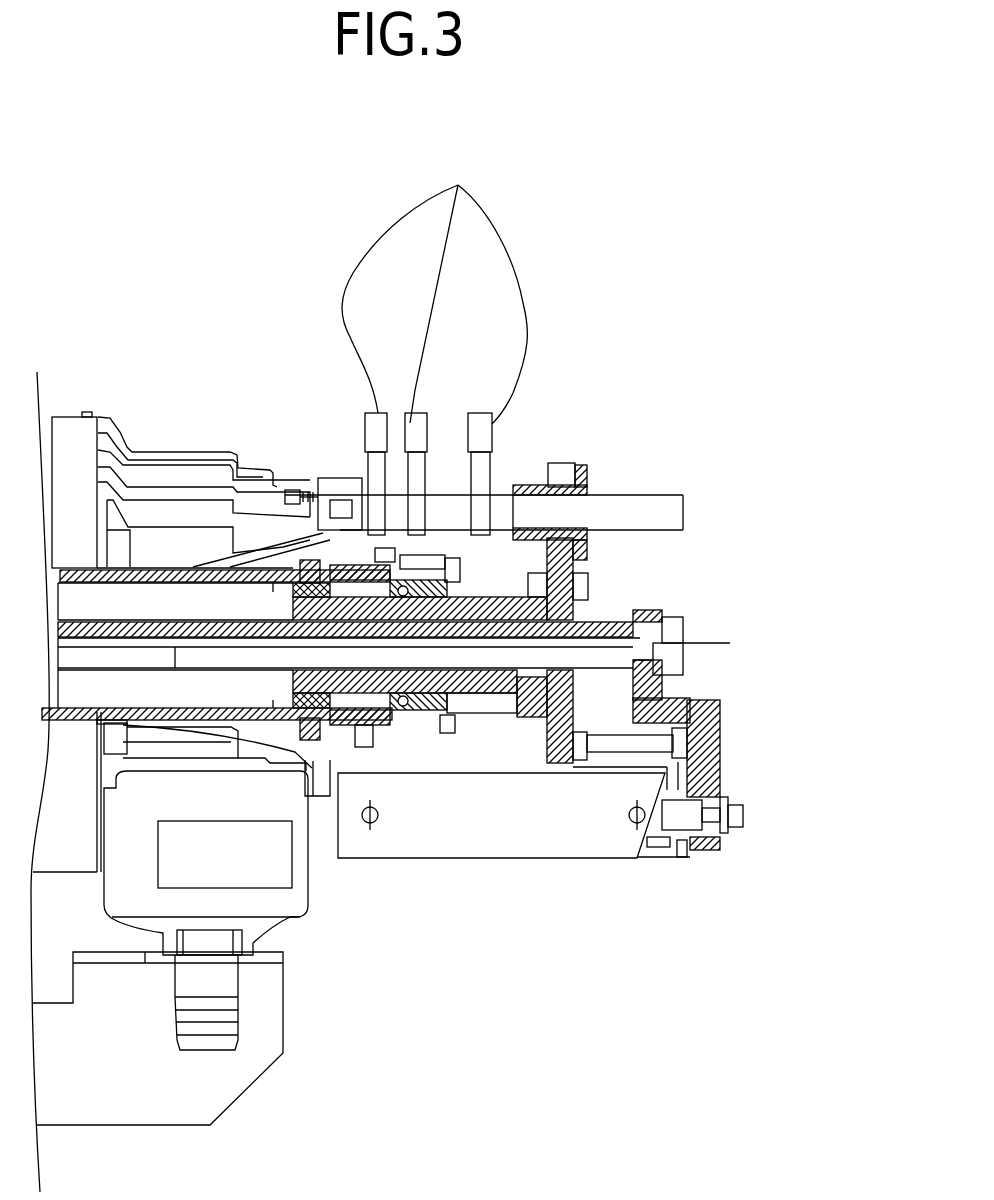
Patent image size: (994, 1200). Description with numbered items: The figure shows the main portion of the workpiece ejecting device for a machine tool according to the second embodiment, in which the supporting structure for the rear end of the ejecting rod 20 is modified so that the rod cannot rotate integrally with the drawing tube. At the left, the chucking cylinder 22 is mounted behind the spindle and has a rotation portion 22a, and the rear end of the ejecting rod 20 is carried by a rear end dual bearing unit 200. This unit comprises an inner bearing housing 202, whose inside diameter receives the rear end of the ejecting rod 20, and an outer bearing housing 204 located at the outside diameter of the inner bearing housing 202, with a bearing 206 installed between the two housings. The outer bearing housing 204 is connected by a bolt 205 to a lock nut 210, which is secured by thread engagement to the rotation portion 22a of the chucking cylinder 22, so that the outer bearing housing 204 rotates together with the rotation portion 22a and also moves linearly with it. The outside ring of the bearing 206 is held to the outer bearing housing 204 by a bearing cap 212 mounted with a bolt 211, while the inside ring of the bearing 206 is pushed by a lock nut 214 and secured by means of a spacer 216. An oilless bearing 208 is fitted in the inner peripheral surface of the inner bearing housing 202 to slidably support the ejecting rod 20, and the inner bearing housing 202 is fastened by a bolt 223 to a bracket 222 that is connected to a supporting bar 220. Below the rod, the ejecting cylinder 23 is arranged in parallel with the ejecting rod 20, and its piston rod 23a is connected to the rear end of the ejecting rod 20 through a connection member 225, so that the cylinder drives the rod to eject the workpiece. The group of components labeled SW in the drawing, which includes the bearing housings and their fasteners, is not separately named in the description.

The switches SW is at (434, 285).
The ejecting rod 20 is at (595, 625).
The chucking cylinder 22 is at (143, 458).
The rotation portion 22a is at (207, 560).
The ejecting cylinder 23 is at (510, 847).
The piston rod 23a is at (703, 847).
The rear end dual bearing unit 200 is at (470, 560).
The inner bearing housing 202 is at (535, 538).
The outer bearing housing 204 is at (378, 455).
The bolt 205 is at (397, 540).
The bearing 206 is at (418, 450).
The oilless bearing 208 is at (525, 645).
The lock nut 210 is at (340, 492).
The bolt 211 is at (508, 578).
The bearing cap 212 is at (440, 556).
The lock nut 214 is at (288, 593).
The spacer 216 is at (322, 642).
The supporting bar 220 is at (672, 500).
The bracket 222 is at (575, 693).
The bolt 223 is at (588, 585).
The connection member 225 is at (720, 752).